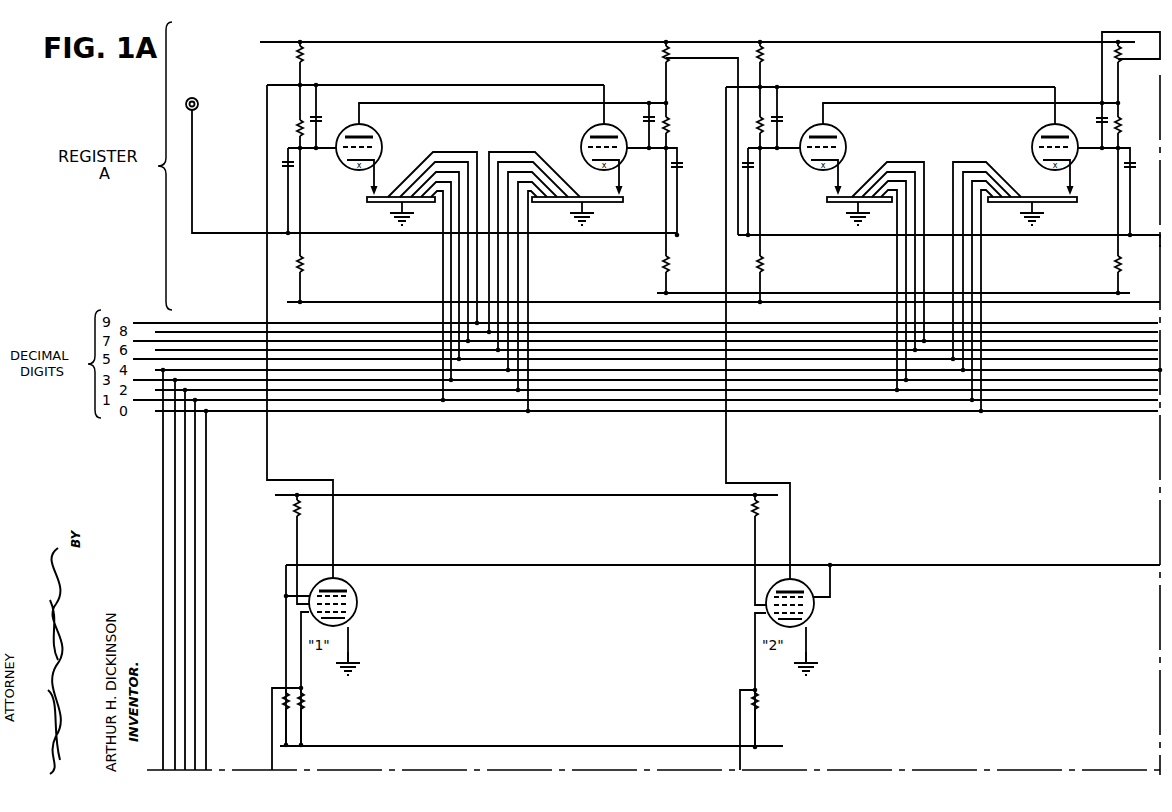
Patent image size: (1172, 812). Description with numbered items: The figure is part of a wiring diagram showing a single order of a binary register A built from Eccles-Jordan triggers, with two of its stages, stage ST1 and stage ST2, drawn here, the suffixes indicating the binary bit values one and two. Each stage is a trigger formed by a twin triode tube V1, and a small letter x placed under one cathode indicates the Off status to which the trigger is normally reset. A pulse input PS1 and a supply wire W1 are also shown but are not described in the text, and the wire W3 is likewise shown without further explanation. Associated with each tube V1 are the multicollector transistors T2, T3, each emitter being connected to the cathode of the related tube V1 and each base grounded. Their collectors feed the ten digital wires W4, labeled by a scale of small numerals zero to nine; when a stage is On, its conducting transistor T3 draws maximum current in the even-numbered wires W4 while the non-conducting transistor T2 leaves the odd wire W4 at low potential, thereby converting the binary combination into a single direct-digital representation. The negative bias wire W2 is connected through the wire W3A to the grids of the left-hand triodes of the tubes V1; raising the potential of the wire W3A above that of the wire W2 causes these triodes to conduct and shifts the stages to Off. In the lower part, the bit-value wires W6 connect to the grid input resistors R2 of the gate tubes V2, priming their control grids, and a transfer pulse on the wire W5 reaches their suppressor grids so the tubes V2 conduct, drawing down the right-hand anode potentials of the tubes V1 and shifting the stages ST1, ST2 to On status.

The pulse source PS1 is at (198, 99).
The triode tube V1 is at (388, 141).
The stage ST1 is at (502, 143).
The stage ST2 is at (953, 143).
The multicollector transistor T2 is at (366, 204).
The multicollector transistor T3 is at (620, 204).
The wire W1 is at (859, 42).
The negative bias wire W2 is at (862, 293).
The wire W3 is at (604, 302).
The wire W3A is at (1062, 302).
The digital wire W4 is at (1033, 323).
The wire W5 is at (1040, 566).
The wire W6 is at (271, 708).
The gate tube V2 is at (357, 600).
The grid input resistor R2 is at (305, 700).